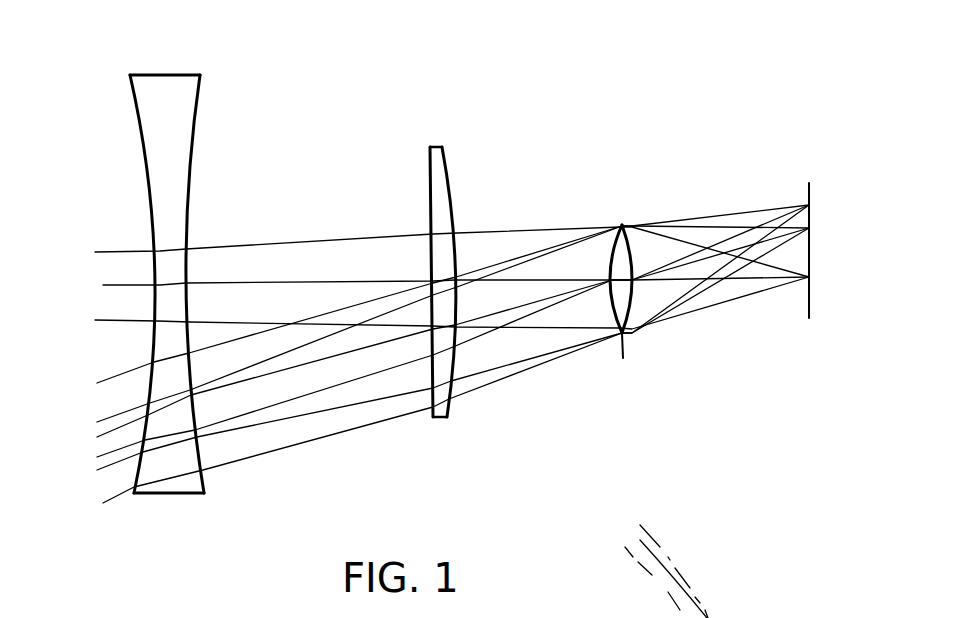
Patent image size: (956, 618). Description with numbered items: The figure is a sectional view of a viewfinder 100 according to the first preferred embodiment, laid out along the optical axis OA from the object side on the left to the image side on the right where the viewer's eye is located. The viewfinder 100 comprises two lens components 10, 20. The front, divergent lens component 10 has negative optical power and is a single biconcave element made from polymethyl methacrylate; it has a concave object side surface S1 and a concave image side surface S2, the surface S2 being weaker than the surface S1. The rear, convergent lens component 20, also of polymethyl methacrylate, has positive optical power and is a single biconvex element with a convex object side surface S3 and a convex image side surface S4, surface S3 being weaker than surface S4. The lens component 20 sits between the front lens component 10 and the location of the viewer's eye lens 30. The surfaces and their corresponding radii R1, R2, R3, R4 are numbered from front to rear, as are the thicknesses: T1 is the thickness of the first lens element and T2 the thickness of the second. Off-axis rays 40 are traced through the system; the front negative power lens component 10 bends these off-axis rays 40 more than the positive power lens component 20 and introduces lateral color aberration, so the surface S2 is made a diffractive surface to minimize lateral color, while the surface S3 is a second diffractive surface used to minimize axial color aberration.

The viewfinder 100 is at (406, 279).
The front divergent lens component 10 is at (158, 317).
The rear convergent lens component 20 is at (433, 296).
The viewer's eye lens 30 is at (622, 360).
The off-axis rays 40 is at (100, 498).
The optical axis OA is at (99, 289).
The concave object side surface S1 is at (107, 284).
The concave image side surface S2 is at (222, 284).
The convex object side surface S3 is at (397, 266).
The convex image side surface S4 is at (473, 266).
The radius of surface S1 R1 is at (133, 111).
The radius of surface S2 R2 is at (187, 176).
The radius of surface S3 R3 is at (428, 170).
The radius of surface S4 R4 is at (453, 198).
The thickness of the first lens element T1 is at (158, 284).
The thickness of the second lens element T2 is at (433, 266).